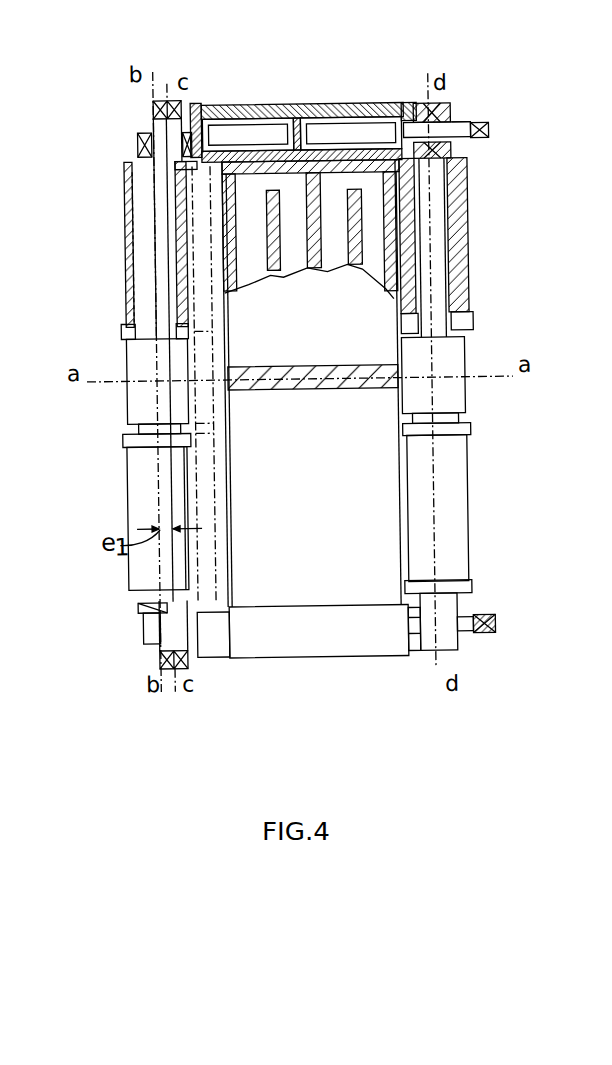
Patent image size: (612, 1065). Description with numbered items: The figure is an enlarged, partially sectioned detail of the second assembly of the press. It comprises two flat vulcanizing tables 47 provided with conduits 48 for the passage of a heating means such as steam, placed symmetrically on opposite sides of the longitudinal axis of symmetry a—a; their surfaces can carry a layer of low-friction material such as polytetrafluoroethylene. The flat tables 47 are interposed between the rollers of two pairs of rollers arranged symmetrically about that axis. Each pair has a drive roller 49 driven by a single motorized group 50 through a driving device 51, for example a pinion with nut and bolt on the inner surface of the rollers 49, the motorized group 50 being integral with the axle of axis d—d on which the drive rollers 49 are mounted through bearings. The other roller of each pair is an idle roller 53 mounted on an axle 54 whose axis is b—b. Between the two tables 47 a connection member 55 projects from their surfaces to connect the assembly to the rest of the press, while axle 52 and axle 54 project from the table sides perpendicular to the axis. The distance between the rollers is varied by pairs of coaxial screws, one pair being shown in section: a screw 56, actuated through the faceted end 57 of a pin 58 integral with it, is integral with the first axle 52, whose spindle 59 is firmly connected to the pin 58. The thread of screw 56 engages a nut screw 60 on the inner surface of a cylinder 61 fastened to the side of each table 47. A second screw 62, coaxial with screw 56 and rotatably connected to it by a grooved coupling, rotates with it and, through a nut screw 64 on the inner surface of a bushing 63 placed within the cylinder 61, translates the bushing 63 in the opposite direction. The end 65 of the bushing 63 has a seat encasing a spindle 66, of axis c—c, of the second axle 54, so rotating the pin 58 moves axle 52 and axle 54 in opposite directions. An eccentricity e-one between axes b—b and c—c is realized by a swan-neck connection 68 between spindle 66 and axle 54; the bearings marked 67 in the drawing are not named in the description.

The flat vulcanizing table 47 is at (460, 358).
The conduit 48 is at (372, 206).
The drive roller 49 is at (460, 220).
The motorized group 50 is at (455, 403).
The driving device 51 is at (472, 336).
The axle 52 is at (442, 271).
The idle roller 53 is at (127, 218).
The axle 54 is at (146, 250).
The connection member 55 is at (172, 362).
The screw 56 is at (366, 135).
The faceted end 57 is at (493, 123).
The pin 58 is at (460, 127).
The spindle 59 is at (463, 122).
The nut screw 60 is at (406, 117).
The cylinder 61 is at (339, 109).
The second screw 62 is at (260, 137).
The bushing 63 is at (220, 112).
The nut screw 64 is at (297, 128).
The end of bushing 65 is at (141, 139).
The spindle 66 is at (181, 124).
The bearing 67 is at (183, 99).
The swan-neck connection 68 is at (165, 150).